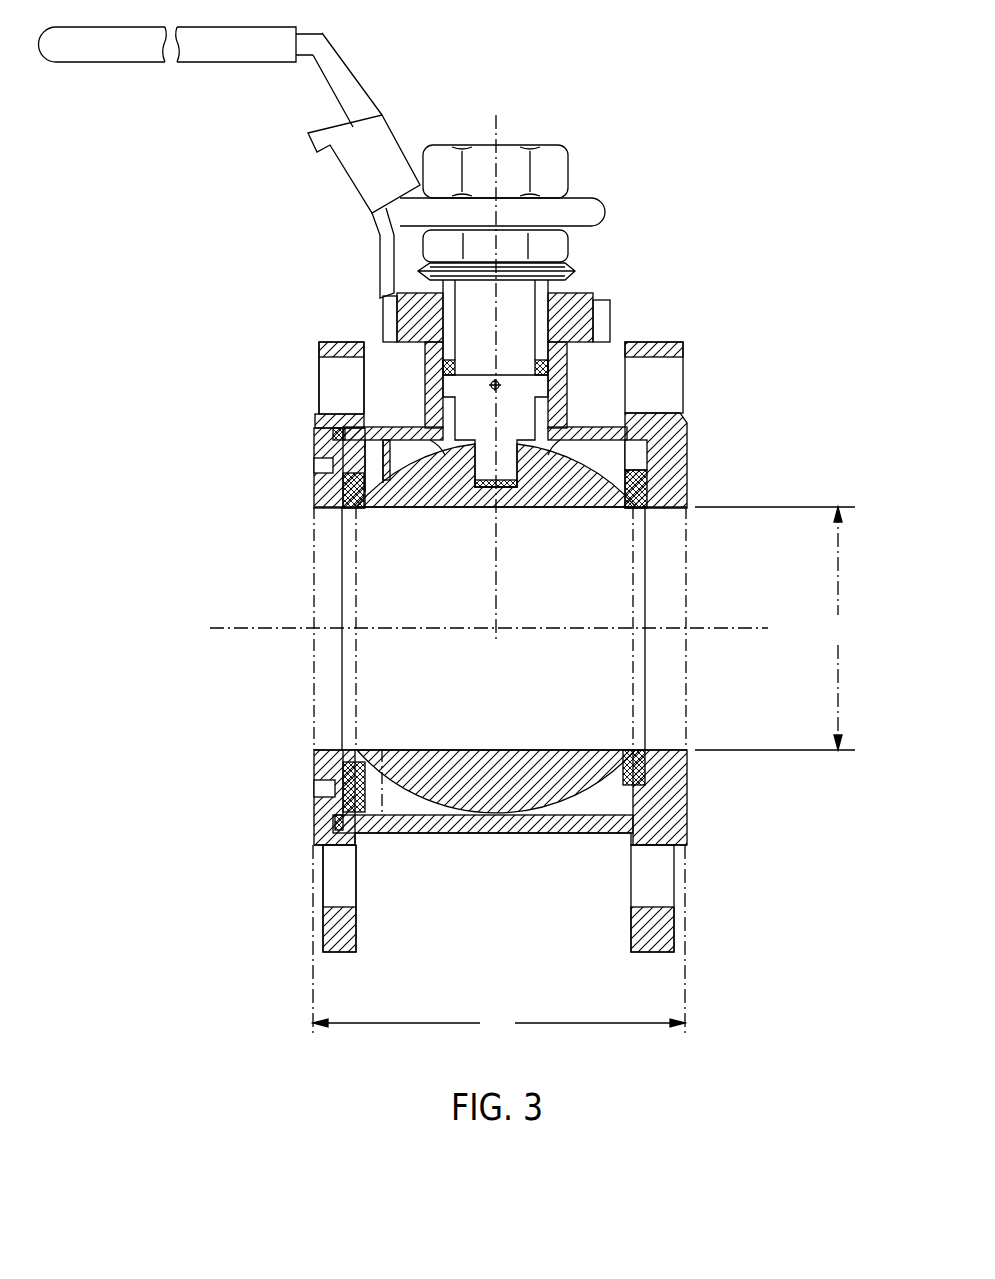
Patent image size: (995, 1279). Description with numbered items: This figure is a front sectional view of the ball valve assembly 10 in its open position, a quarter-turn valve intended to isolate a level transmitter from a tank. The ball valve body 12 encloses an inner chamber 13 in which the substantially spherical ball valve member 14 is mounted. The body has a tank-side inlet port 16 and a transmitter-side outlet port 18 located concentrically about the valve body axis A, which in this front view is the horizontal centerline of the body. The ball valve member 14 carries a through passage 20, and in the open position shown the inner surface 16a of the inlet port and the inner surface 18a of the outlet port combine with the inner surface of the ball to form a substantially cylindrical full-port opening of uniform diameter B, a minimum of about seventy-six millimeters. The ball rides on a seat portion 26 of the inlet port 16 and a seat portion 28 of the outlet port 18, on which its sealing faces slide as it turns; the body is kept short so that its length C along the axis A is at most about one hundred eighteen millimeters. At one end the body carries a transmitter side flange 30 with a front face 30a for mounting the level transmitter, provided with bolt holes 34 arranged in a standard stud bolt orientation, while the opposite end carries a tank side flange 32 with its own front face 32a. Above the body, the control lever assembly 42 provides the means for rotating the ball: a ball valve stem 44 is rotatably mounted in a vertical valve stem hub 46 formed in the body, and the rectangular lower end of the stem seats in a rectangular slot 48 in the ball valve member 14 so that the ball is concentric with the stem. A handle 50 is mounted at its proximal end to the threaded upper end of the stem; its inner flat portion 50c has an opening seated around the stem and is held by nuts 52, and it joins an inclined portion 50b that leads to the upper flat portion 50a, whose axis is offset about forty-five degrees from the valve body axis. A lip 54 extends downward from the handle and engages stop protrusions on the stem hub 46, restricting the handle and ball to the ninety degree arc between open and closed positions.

The ball valve assembly 10 is at (177, 313).
The ball valve body 12 is at (310, 413).
The inner chamber 13 is at (603, 457).
The ball valve member 14 is at (408, 472).
The inlet port 16 is at (719, 628).
The inner surface of inlet port 16a is at (668, 508).
The outlet port 18 is at (272, 628).
The inner surface of outlet port 18a is at (318, 590).
The through passage 20 is at (545, 714).
The seat portion 26 is at (632, 483).
The seat portion 28 is at (335, 478).
The transmitter side flange 30 is at (334, 342).
The front face of transmitter side flange 30a is at (318, 930).
The tank side flange 32 is at (656, 342).
The front face of tank side flange 32a is at (674, 930).
The bolt holes 34 is at (332, 372).
The control lever assembly 42 is at (620, 176).
The ball valve stem 44 is at (512, 353).
The valve stem hub 46 is at (580, 303).
The rectangular slot 48 is at (490, 489).
The handle 50 is at (241, 151).
The upper flat portion 50a is at (109, 50).
The inclined portion 50b is at (337, 83).
The inner flat portion 50c is at (608, 212).
The nuts 52 is at (563, 170).
The lip 54 is at (380, 266).
The valve body axis A is at (752, 627).
The uniform diameter of cylindrical opening B is at (775, 628).
The length of valve body C is at (499, 941).